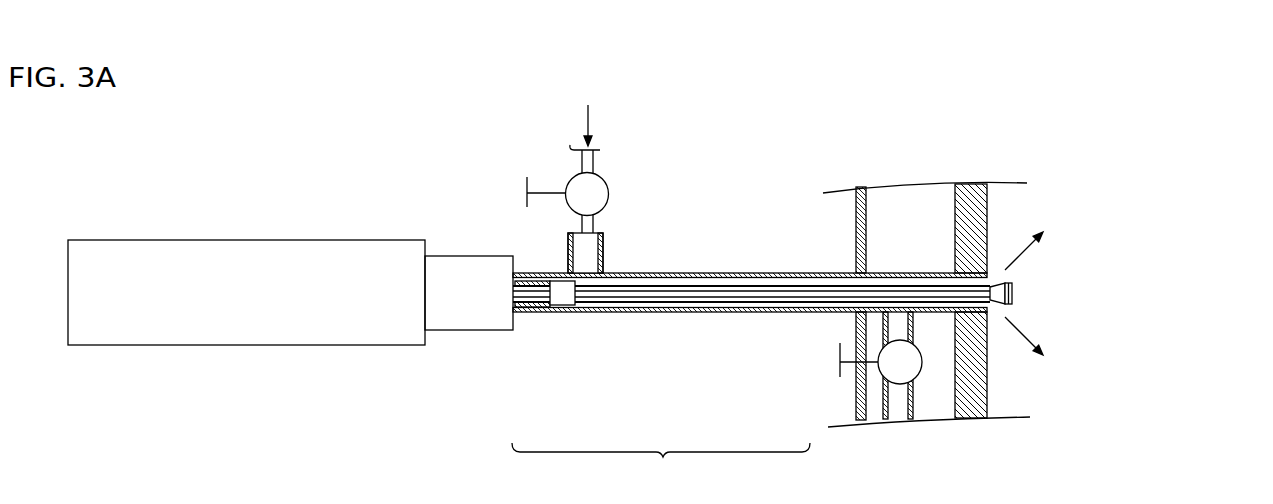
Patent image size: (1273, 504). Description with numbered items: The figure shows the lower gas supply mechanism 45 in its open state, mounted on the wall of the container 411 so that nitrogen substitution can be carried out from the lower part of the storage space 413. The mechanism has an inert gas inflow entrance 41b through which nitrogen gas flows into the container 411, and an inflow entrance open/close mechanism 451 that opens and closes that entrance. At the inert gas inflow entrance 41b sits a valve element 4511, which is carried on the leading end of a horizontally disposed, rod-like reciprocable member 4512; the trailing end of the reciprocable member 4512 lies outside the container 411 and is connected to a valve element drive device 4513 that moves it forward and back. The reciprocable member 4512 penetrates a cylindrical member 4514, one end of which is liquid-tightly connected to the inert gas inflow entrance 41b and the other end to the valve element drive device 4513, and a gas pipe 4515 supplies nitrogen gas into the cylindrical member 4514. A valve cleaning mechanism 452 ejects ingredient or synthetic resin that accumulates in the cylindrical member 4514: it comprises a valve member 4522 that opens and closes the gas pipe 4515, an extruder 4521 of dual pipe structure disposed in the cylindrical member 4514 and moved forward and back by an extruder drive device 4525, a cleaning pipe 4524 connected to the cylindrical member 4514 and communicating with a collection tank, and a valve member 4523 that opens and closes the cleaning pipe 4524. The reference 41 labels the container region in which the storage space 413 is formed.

The lower gas supply mechanism 45 is at (170, 208).
The inflow entrance open/close mechanism 451 is at (281, 347).
The valve element drive device 4513 is at (452, 262).
The cylindrical member 4514 is at (775, 273).
The reciprocable member 4512 is at (697, 286).
The valve member 4522 is at (596, 197).
The extruder drive device 4525 is at (408, 317).
The extruder 4521 is at (563, 297).
The gas pipe 4515 is at (568, 262).
The valve element 4511 is at (1015, 303).
The chamber 41 is at (950, 176).
The container 411 is at (987, 373).
The storage space 413 is at (1042, 219).
The inert gas inflow entrance 41b is at (972, 287).
The cleaning pipe 4524 is at (887, 400).
The valve member 4523 is at (878, 362).
The valve cleaning mechanism 452 is at (661, 466).